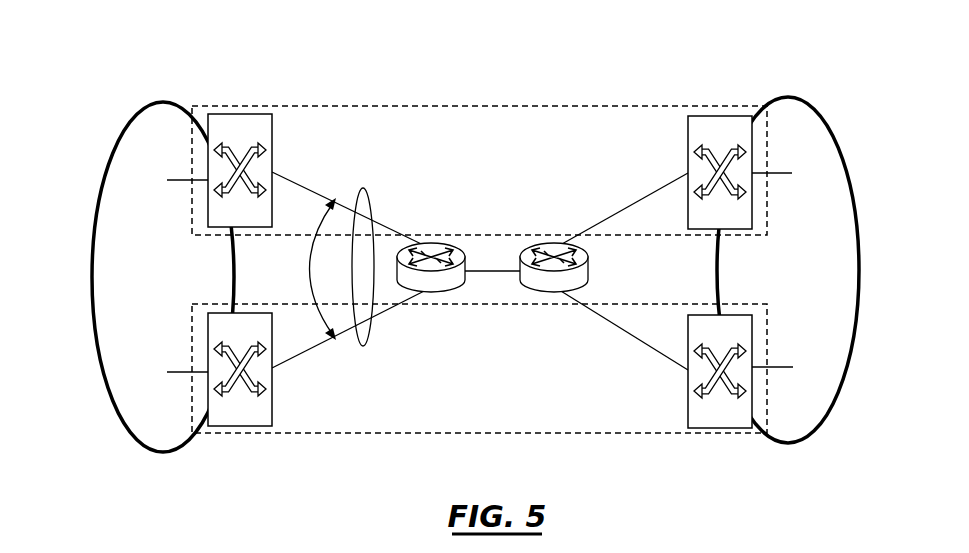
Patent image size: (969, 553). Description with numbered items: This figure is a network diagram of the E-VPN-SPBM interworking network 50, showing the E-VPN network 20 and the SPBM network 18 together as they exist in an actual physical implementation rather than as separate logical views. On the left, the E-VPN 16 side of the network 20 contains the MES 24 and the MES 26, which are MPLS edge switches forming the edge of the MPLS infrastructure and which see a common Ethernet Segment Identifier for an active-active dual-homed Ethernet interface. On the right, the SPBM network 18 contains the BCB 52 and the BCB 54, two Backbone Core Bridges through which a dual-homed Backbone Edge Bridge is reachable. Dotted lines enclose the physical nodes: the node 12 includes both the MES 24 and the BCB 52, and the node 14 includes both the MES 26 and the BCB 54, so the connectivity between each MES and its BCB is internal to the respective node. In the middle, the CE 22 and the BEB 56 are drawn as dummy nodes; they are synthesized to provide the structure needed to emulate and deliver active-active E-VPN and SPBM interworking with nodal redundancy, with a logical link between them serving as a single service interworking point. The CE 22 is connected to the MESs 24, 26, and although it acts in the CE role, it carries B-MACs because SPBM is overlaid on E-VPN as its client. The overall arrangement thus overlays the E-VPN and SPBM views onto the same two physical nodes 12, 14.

The E-VPN-SPBM interworking network 50 is at (593, 58).
The E-VPN network 20 is at (116, 82).
The E-VPN 16 is at (168, 102).
The SPBM network 18 is at (787, 97).
The node 12 is at (470, 106).
The node 14 is at (391, 433).
The MES 24 is at (240, 114).
The MES 26 is at (250, 426).
The BCB 52 is at (718, 116).
The BCB 54 is at (726, 428).
The CE 22 is at (447, 246).
The BEB 56 is at (544, 293).